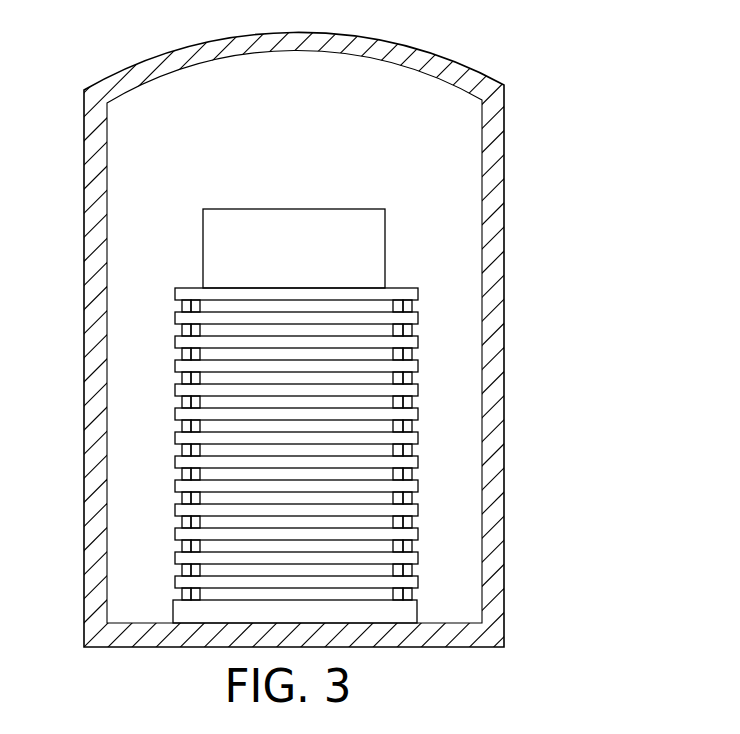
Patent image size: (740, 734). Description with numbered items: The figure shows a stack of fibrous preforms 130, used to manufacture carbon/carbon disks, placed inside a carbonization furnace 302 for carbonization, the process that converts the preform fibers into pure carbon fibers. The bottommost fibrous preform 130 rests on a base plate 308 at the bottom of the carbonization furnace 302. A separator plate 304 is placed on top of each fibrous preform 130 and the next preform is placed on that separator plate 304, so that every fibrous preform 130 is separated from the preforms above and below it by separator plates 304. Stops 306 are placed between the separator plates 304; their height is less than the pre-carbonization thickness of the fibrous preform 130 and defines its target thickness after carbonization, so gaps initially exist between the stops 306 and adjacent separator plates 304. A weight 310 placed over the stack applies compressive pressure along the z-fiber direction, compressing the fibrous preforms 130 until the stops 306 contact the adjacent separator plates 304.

The carbonization furnace 302 is at (488, 78).
The weight 310 is at (339, 218).
The separator plate 304 is at (194, 293).
The stops 306 is at (188, 306).
The base plate 308 is at (402, 611).
The fibrous preform 130 is at (382, 308).